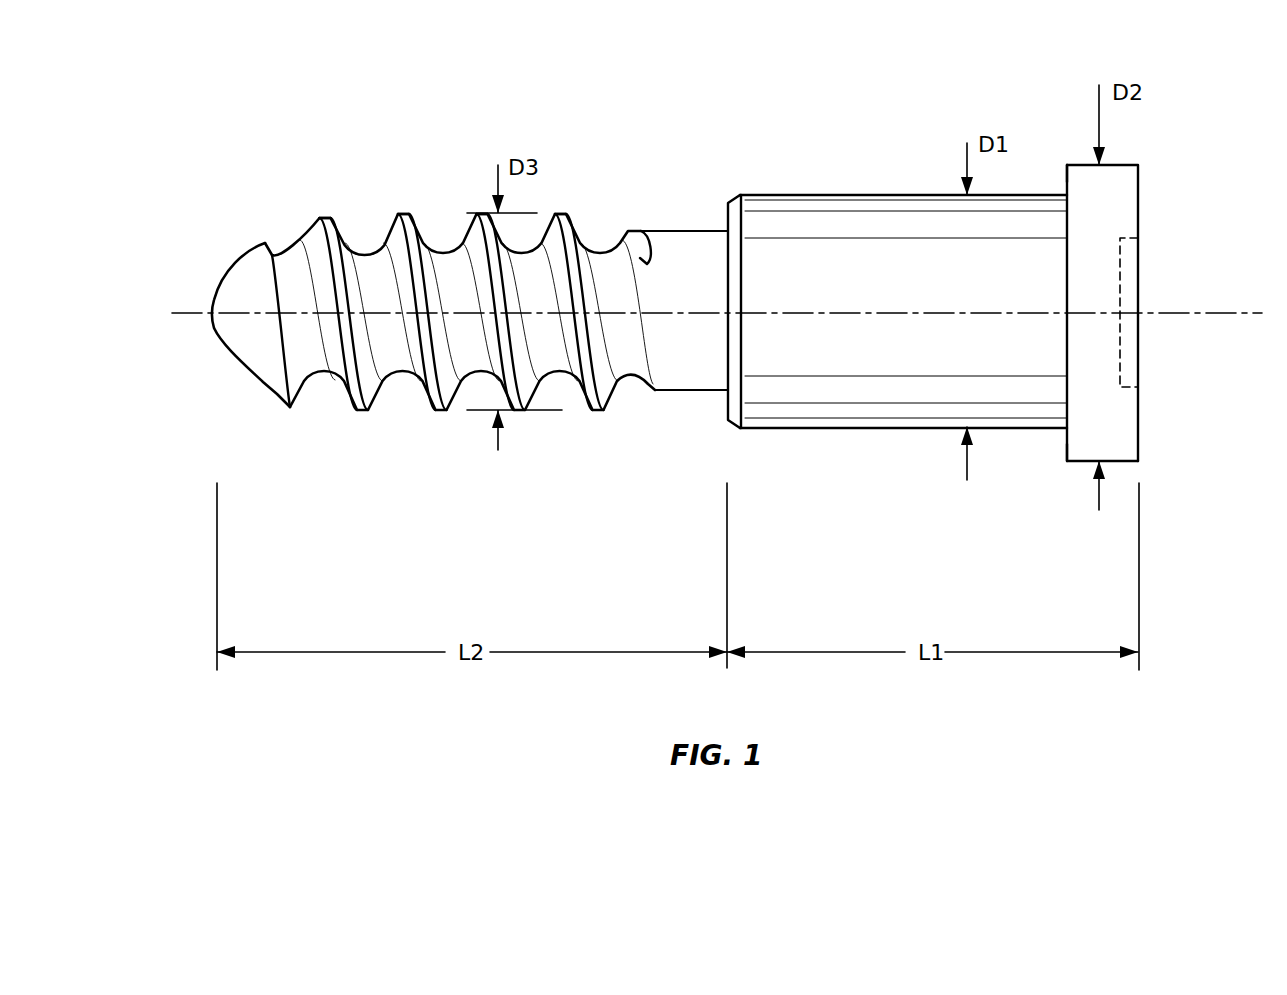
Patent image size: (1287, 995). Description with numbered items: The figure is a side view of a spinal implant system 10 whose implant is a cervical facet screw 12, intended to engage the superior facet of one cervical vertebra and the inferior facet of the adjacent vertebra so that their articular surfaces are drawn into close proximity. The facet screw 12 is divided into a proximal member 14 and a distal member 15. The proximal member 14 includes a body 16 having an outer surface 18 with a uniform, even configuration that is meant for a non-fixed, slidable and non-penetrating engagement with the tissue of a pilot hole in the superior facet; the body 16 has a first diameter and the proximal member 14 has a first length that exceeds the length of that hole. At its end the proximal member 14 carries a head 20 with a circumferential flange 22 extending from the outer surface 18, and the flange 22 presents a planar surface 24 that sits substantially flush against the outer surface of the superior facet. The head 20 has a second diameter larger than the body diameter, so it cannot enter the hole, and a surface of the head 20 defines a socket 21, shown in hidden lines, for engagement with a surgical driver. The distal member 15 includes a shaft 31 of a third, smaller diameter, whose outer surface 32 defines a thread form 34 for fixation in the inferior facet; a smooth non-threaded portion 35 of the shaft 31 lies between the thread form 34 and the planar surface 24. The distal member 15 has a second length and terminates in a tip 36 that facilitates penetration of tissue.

The spinal implant system 10 is at (203, 79).
The cervical facet screw 12 is at (170, 242).
The proximal member 14 is at (855, 470).
The distal member 15 is at (457, 507).
The body 16 is at (791, 195).
The outer surface 18 is at (888, 262).
The head 20 is at (1118, 423).
The socket 21 is at (1120, 278).
The circumferential flange 22 is at (1123, 165).
The planar surface 24 is at (1065, 181).
The shaft 31 is at (458, 335).
The outer surface 32 is at (443, 252).
The thread form 34 is at (398, 208).
The non-threaded portion 35 is at (697, 288).
The tip 36 is at (238, 362).